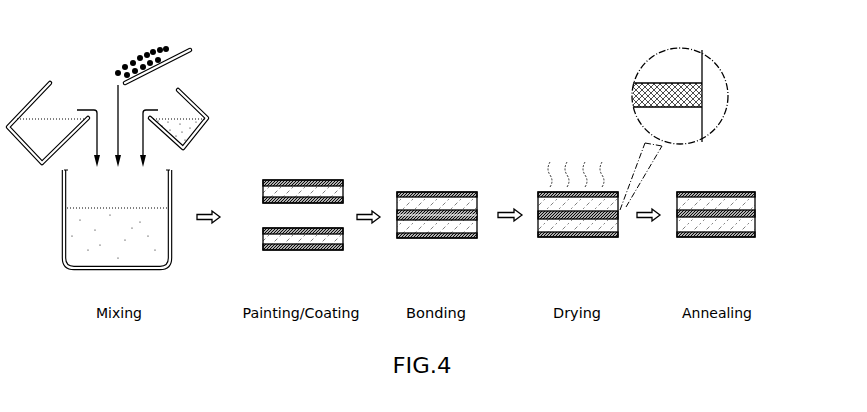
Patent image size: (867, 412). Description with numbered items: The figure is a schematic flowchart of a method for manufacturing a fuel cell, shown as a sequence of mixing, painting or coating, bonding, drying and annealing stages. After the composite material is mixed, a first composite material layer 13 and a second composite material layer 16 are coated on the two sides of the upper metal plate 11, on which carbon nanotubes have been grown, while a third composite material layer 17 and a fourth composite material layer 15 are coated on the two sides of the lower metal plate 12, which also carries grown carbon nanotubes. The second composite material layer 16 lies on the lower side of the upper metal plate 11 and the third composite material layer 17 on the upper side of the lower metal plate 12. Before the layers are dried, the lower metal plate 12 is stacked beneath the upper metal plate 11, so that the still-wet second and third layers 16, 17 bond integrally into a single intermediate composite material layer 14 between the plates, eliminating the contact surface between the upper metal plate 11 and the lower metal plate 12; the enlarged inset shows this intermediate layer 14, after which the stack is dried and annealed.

The upper metal plate 11 is at (341, 192).
The lower metal plate 12 is at (340, 238).
The first composite material layer 13 is at (300, 180).
The intermediate composite material layer 14 is at (618, 215).
The fourth composite material layer 15 is at (272, 250).
The second composite material layer 16 is at (263, 203).
The third composite material layer 17 is at (263, 228).